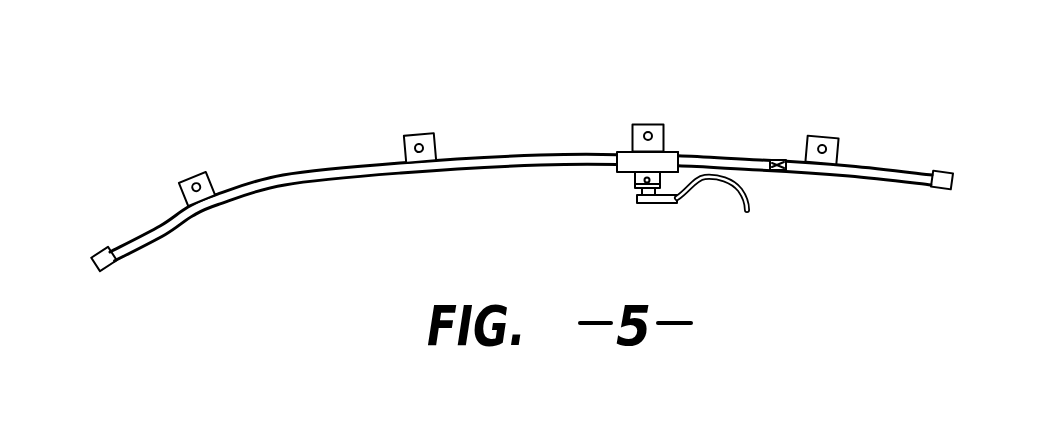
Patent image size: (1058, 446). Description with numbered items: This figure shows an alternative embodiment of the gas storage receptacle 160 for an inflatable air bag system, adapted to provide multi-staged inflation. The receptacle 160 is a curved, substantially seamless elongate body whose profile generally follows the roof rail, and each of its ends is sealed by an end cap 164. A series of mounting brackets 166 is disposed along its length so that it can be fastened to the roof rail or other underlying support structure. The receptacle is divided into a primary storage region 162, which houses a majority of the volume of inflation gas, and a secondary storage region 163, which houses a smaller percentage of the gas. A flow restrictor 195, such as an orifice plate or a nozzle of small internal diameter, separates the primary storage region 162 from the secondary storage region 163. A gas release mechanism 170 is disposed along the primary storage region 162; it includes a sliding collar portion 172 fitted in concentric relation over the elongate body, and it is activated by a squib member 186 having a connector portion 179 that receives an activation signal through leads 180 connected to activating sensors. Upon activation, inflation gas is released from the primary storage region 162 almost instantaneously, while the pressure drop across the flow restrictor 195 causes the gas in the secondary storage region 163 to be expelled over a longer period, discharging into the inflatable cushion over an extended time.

The gas storage receptacle 160 is at (283, 175).
The primary storage region 162 is at (533, 154).
The secondary storage region 163 is at (877, 184).
The end cap 164 is at (103, 247).
The mounting bracket 166 is at (195, 172).
The gas release mechanism 170 is at (623, 183).
The sliding collar portion 172 is at (679, 151).
The connector portion 179 is at (663, 204).
The leads 180 is at (722, 210).
The squib member 186 is at (635, 189).
The flow restrictor 195 is at (777, 159).